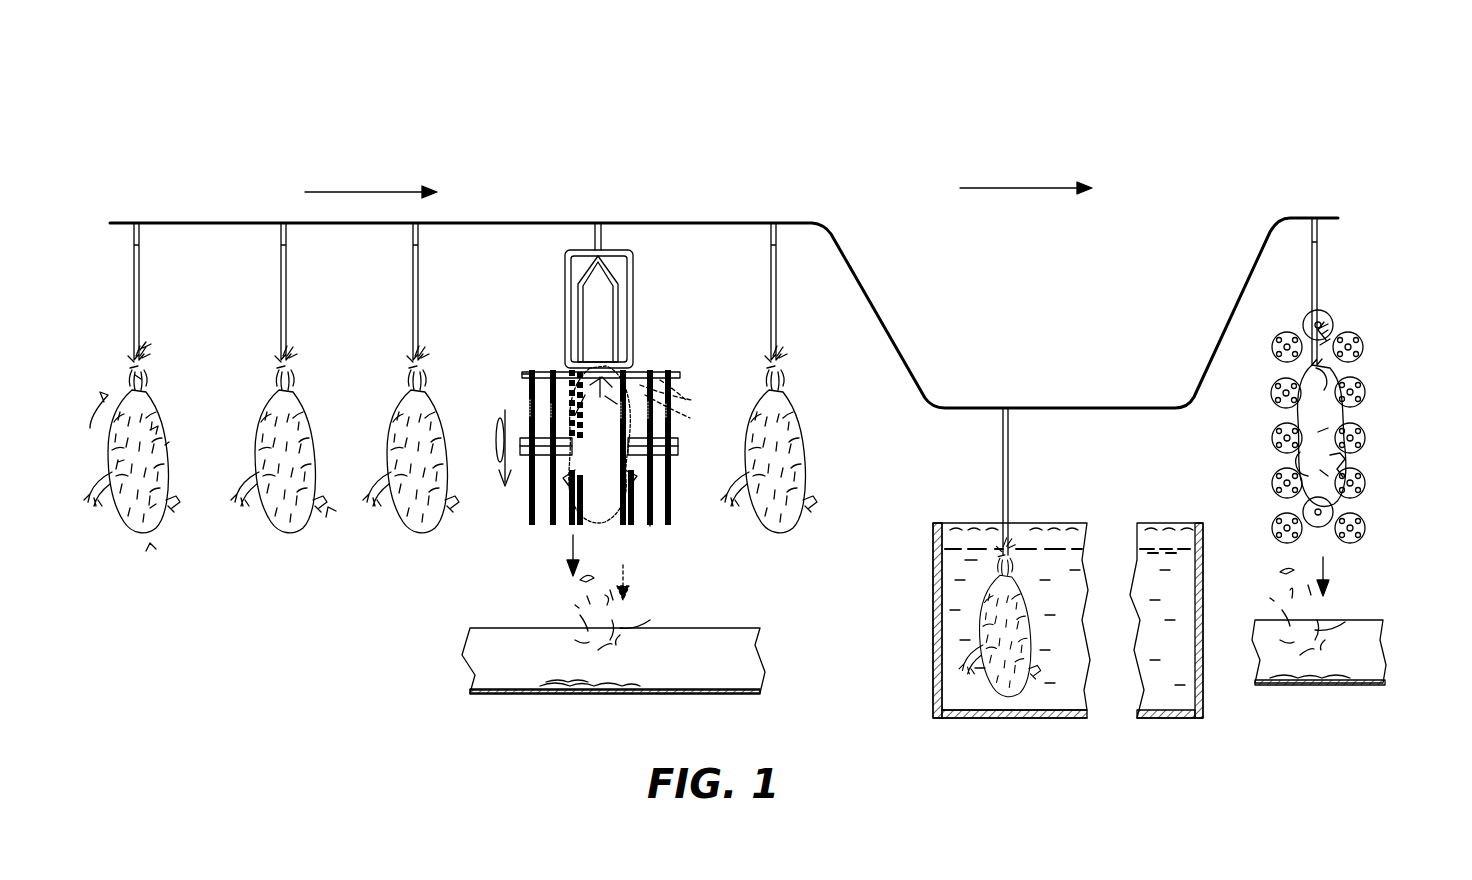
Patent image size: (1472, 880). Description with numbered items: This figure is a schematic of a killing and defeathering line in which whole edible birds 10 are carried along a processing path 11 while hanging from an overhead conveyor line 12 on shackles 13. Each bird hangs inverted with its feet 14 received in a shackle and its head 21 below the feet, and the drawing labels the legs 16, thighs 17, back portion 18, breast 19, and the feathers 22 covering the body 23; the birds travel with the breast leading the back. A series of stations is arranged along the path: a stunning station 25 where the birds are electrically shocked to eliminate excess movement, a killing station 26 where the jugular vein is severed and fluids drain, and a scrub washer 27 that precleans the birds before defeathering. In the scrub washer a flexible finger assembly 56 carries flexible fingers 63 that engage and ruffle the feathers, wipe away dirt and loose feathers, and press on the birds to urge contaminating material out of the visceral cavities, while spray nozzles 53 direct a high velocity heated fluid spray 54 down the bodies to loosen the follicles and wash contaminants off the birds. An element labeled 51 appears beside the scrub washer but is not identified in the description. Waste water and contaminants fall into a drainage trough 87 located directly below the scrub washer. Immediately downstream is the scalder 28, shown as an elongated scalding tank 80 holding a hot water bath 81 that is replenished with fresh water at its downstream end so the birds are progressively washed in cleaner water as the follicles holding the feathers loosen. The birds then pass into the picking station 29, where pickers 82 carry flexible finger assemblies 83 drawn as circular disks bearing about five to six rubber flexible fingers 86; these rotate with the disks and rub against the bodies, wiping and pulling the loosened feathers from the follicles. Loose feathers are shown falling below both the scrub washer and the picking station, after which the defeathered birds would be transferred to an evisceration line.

The birds 10 is at (196, 416).
The processing path 11 is at (698, 180).
The overhead conveyor line 12 is at (512, 223).
The shackles 13 is at (132, 275).
The feet 14 is at (146, 340).
The legs 16 is at (130, 366).
The thighs 17 is at (140, 388).
The back portion 18 is at (120, 461).
The breast 19 is at (166, 446).
The heads 21 is at (152, 508).
The feathers 22 is at (108, 395).
The bodies 23 is at (162, 436).
The stunning station 25 is at (150, 543).
The killing station 26 is at (328, 507).
The scrub washer 27 is at (532, 573).
The scalder 28 is at (892, 680).
The picking station 29 is at (1368, 439).
The support bar 51 is at (520, 376).
The spray nozzles 53 is at (555, 378).
The fluid spray 54 is at (687, 404).
The flexible finger assembly 56 is at (510, 530).
The flexible fingers 63 is at (652, 527).
The scalding tank 80 is at (995, 718).
The hot water bath 81 is at (1166, 620).
The pickers 82 is at (1380, 352).
The flexible finger assemblies 83 is at (1438, 355).
The flexible fingers 86 is at (1365, 532).
The drainage trough 87 is at (504, 668).